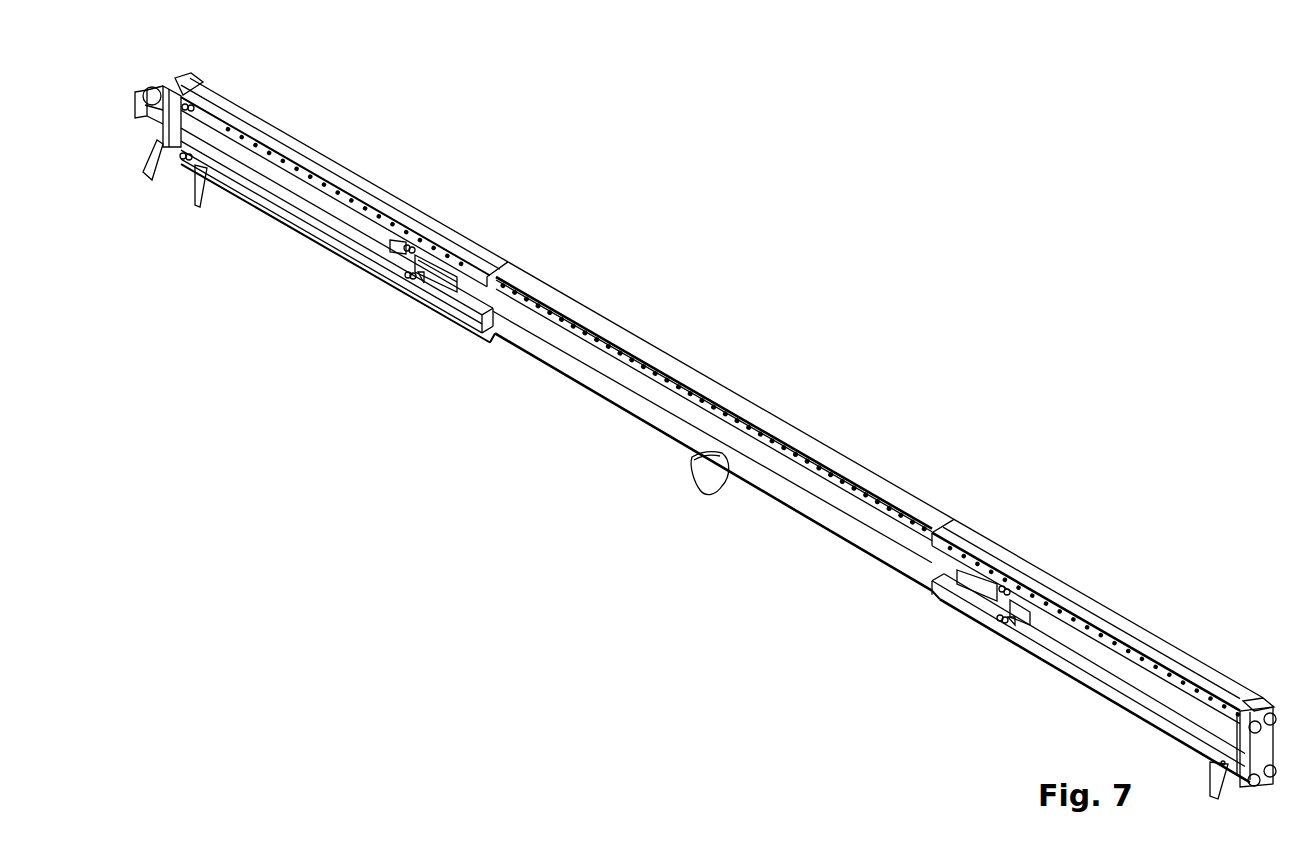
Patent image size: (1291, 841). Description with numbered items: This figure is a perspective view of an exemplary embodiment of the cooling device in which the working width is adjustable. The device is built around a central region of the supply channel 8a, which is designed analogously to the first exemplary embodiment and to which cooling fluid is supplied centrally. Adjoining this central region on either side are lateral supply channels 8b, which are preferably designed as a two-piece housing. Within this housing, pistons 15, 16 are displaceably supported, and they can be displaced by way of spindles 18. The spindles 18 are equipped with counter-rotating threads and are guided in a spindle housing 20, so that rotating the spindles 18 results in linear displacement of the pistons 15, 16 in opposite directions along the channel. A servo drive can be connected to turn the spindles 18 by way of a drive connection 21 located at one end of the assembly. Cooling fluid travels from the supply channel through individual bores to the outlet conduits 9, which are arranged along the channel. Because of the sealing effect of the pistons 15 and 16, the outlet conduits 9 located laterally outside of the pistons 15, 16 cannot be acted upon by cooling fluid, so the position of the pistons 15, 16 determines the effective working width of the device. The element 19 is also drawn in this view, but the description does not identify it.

The central region of the supply channel 8a is at (733, 404).
The lateral supply channels 8b is at (377, 188).
The outlet conduits 9 is at (668, 387).
The piston 15 is at (408, 258).
The piston 16 is at (1002, 605).
The spindles 18 is at (525, 310).
The handle 19 is at (708, 472).
The spindle housing 20 is at (622, 376).
The drive connection 21 is at (151, 88).